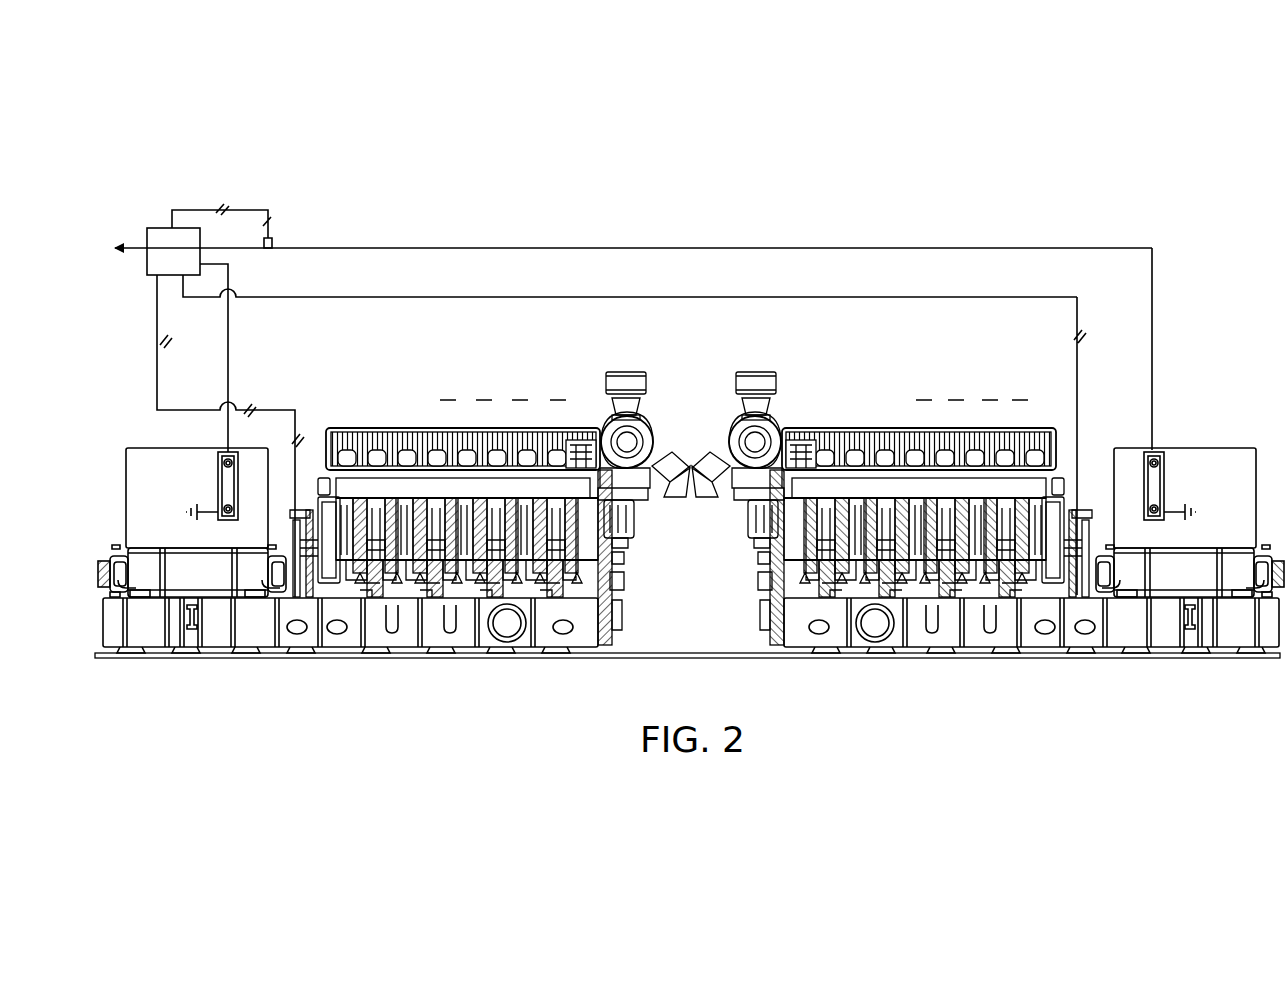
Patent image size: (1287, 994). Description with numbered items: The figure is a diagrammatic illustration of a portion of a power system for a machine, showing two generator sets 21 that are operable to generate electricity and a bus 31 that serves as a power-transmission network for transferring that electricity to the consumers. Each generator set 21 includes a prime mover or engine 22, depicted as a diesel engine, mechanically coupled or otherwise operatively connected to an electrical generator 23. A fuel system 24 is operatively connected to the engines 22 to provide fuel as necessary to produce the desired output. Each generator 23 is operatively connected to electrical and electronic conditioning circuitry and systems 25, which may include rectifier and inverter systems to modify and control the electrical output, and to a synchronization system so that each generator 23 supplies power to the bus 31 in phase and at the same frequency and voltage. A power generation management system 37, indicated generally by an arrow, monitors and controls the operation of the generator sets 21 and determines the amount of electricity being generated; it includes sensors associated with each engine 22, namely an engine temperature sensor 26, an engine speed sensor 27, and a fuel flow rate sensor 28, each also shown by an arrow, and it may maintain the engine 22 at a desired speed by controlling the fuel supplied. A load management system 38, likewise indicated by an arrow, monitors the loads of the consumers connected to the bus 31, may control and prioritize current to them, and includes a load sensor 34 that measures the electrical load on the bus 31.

The generator set 21 is at (398, 695).
The engine 22 is at (388, 430).
The electrical generator 23 is at (150, 462).
The fuel system 24 is at (448, 398).
The conditioning circuitry and systems 25 is at (250, 385).
The engine temperature sensor 26 is at (484, 398).
The engine speed sensor 27 is at (520, 398).
The fuel flow rate sensor 28 is at (558, 398).
The bus 31 is at (507, 245).
The load sensor 34 is at (170, 240).
The power generation management system 37 is at (750, 190).
The load management system 38 is at (810, 195).